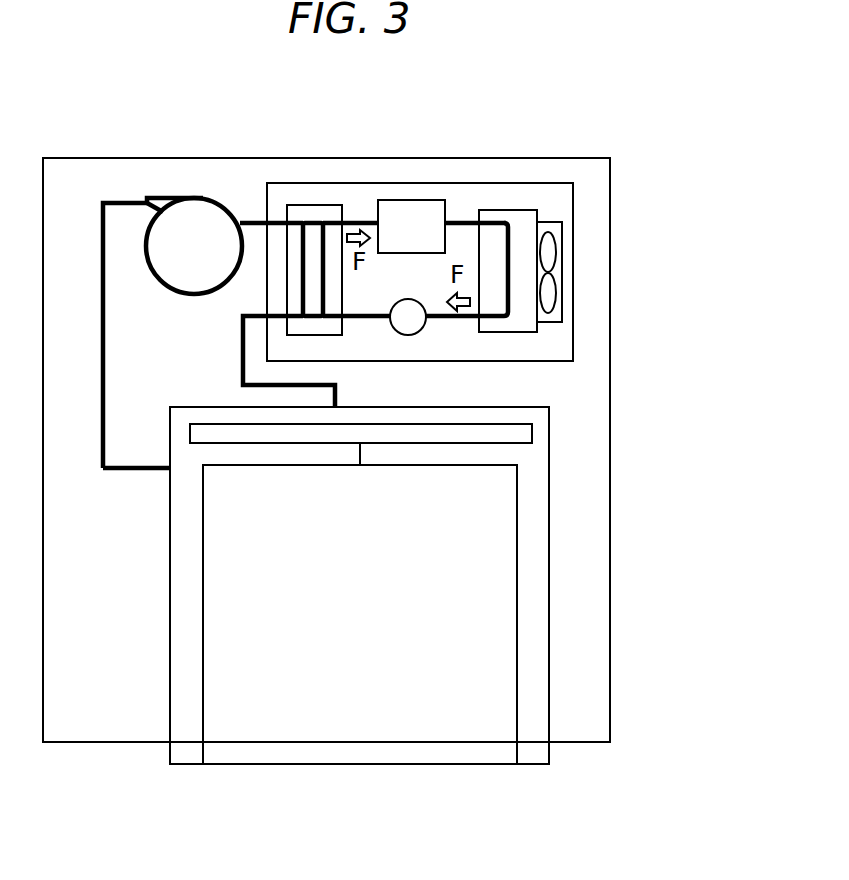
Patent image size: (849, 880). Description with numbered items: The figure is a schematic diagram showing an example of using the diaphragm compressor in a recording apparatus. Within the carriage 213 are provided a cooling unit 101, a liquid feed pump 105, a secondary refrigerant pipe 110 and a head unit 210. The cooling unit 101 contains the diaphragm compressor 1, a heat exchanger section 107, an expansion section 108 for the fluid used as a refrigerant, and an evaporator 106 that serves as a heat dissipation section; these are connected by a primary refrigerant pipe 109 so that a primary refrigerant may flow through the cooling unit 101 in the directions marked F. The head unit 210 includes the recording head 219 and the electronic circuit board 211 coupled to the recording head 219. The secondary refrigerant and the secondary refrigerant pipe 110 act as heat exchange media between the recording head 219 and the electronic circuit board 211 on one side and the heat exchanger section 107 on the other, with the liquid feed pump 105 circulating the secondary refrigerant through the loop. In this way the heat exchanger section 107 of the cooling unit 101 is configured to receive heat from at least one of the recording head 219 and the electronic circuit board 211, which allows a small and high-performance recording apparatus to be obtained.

The diaphragm compressor 1 is at (410, 212).
The cooling unit 101 is at (362, 183).
The liquid feed pump 105 is at (190, 217).
The evaporator 106 is at (312, 215).
The heat exchanger section 107 is at (522, 220).
The expansion section 108 is at (412, 322).
The primary refrigerant pipe 109 is at (467, 222).
The secondary refrigerant pipe 110 is at (122, 203).
The head unit 210 is at (550, 633).
The electronic circuit board 211 is at (532, 433).
The carriage 213 is at (657, 173).
The recording head 219 is at (517, 563).